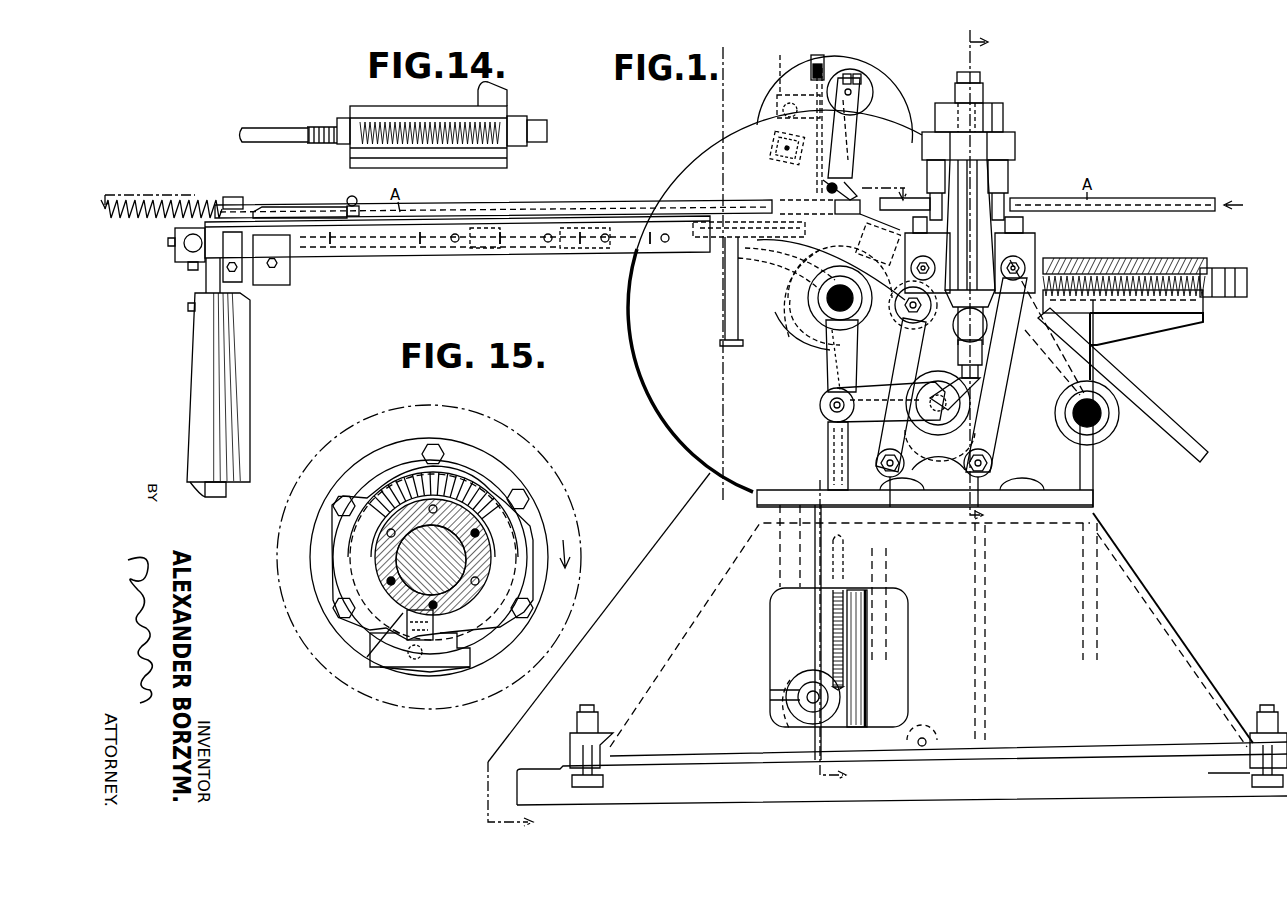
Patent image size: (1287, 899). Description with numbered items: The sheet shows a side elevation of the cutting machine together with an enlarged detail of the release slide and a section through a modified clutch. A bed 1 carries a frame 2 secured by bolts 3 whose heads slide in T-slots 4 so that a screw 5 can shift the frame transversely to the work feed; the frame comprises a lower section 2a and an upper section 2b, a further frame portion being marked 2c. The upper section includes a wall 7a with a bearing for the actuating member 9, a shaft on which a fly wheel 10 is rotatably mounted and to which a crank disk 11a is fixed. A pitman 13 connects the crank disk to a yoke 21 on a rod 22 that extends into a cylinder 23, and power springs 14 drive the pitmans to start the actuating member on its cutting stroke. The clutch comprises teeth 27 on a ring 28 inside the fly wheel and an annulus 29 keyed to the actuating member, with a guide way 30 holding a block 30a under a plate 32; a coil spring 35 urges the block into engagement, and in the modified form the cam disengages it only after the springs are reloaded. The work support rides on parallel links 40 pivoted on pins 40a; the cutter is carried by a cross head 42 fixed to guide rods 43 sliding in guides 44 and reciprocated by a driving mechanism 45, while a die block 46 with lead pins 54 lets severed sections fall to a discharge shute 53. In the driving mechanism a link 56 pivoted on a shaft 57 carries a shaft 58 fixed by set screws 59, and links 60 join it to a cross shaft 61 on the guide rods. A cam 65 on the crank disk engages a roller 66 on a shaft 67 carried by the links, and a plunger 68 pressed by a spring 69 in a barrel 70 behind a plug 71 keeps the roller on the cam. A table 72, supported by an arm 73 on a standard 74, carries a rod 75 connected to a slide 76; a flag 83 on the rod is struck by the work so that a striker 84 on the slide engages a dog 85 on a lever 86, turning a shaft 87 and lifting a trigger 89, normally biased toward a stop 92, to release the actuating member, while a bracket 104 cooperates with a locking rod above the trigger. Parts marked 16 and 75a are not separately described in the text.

In FIG. 1, the bed 1 is at (693, 798).
In FIG. 1, the frame 2 is at (723, 47).
In FIG. 1, the lower section 2a is at (1150, 600).
In FIG. 1, the upper section 2b is at (962, 475).
In FIG. 1, the guide bracket 2c is at (752, 276).
In FIG. 1, the bolts 3 is at (586, 704).
In FIG. 1, the T-slots 4 is at (800, 186).
In FIG. 1, the screw 5 is at (978, 277).
In FIG. 1, the wall 7a is at (706, 470).
In FIG. 15, the actuating member 9 is at (455, 561).
In FIG. 1, the actuating member 9 is at (500, 185).
In FIG. 15, the fly wheel 10 is at (565, 492).
In FIG. 1, the crank disk 11a is at (830, 318).
In FIG. 1, the pitman 13 is at (830, 368).
In FIG. 1, the power springs 14 is at (845, 610).
In FIG. 1, the gear 16 is at (805, 720).
In FIG. 1, the yoke 21 is at (826, 428).
In FIG. 1, the rod 22 is at (828, 468).
In FIG. 1, the cylinder 23 is at (862, 675).
In FIG. 15, the teeth 27 is at (460, 490).
In FIG. 15, the ring 28 is at (385, 455).
In FIG. 15, the annulus 29 is at (525, 536).
In FIG. 15, the guide way 30 is at (445, 668).
In FIG. 15, the block 30a is at (434, 625).
In FIG. 15, the plate 32 is at (470, 651).
In FIG. 15, the coil spring 35 is at (415, 660).
In FIG. 1, the links 40 is at (885, 452).
In FIG. 1, the pins 40a is at (892, 480).
In FIG. 1, the cross head 42 is at (1005, 114).
In FIG. 1, the guide rods 43 is at (1000, 150).
In FIG. 1, the guides 44 is at (950, 246).
In FIG. 1, the driving mechanism 45 is at (857, 356).
In FIG. 1, the block 46 is at (1005, 228).
In FIG. 1, the discharge shute 53 is at (1150, 425).
In FIG. 1, the lead pins 54 is at (1010, 190).
In FIG. 1, the link 56 is at (820, 403).
In FIG. 1, the shaft 57 is at (1080, 440).
In FIG. 1, the shaft 58 is at (937, 424).
In FIG. 1, the set screws 59 is at (945, 462).
In FIG. 1, the links 60 is at (962, 380).
In FIG. 1, the cross shaft 61 is at (953, 328).
In FIG. 1, the cam 65 is at (810, 298).
In FIG. 1, the roller 66 is at (900, 295).
In FIG. 1, the shaft 67 is at (898, 330).
In FIG. 1, the plunger 68 is at (1034, 262).
In FIG. 1, the spring 69 is at (1160, 276).
In FIG. 1, the barrel 70 is at (1126, 258).
In FIG. 1, the plug 71 is at (1240, 264).
In FIG. 1, the table 72 is at (405, 262).
In FIG. 1, the arm 73 is at (186, 248).
In FIG. 1, the standard 74 is at (245, 416).
In FIG. 14, the rod 75 is at (290, 128).
In FIG. 1, the rod 75 is at (250, 208).
In FIG. 14, the nut 75a is at (532, 118).
In FIG. 14, the slide 76 is at (438, 152).
In FIG. 1, the slide 76 is at (862, 216).
In FIG. 1, the flag 83 is at (358, 205).
In FIG. 14, the striker 84 is at (500, 90).
In FIG. 1, the striker 84 is at (858, 200).
In FIG. 1, the dog 85 is at (850, 192).
In FIG. 1, the lever 86 is at (852, 142).
In FIG. 1, the shaft 87 is at (862, 84).
In FIG. 1, the trigger 89 is at (817, 60).
In FIG. 1, the stop 92 is at (780, 62).
In FIG. 1, the bracket 104 is at (822, 56).